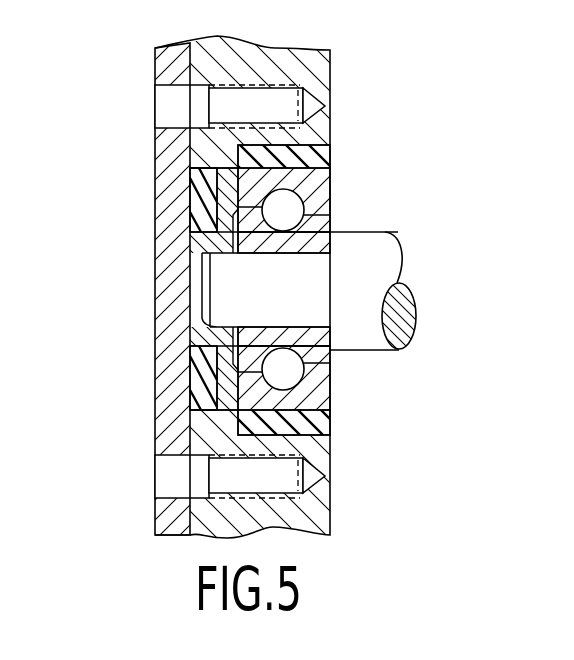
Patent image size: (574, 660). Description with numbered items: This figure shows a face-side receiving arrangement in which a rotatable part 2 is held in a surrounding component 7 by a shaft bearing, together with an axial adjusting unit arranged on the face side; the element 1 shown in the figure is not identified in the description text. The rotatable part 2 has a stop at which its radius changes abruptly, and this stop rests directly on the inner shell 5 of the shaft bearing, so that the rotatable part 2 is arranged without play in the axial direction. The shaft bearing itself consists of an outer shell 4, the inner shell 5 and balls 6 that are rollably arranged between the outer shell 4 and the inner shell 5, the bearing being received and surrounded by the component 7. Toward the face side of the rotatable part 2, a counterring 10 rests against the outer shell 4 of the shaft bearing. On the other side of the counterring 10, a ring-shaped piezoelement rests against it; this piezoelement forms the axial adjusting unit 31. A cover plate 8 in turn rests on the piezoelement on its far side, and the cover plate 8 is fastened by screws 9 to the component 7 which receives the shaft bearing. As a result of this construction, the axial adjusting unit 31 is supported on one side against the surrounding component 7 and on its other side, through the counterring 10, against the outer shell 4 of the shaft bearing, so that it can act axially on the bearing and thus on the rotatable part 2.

The bearing housing 1 is at (320, 157).
The rotatable part 2 is at (375, 281).
The outer shell 4 is at (320, 185).
The inner shell 5 is at (320, 244).
The balls 6 is at (292, 207).
The surrounding component 7 is at (322, 66).
The cover plate 8 is at (158, 62).
The screws 9 is at (170, 108).
The counterring 10 is at (220, 340).
The axial adjusting unit 31 is at (196, 213).